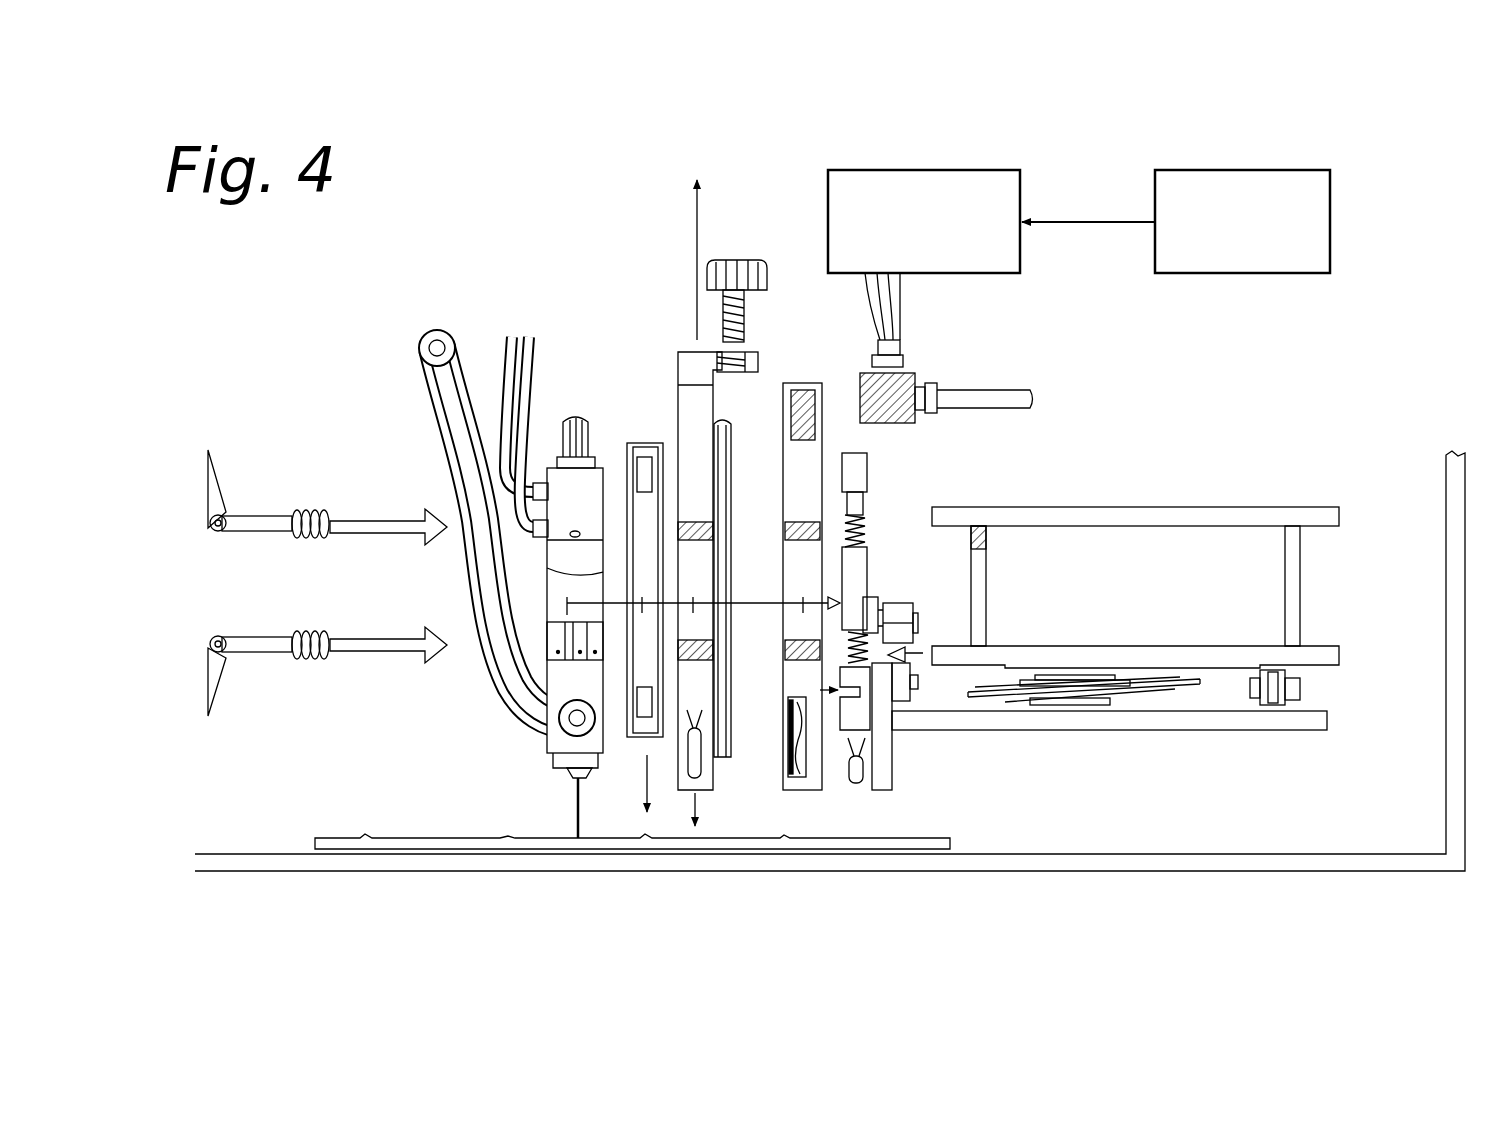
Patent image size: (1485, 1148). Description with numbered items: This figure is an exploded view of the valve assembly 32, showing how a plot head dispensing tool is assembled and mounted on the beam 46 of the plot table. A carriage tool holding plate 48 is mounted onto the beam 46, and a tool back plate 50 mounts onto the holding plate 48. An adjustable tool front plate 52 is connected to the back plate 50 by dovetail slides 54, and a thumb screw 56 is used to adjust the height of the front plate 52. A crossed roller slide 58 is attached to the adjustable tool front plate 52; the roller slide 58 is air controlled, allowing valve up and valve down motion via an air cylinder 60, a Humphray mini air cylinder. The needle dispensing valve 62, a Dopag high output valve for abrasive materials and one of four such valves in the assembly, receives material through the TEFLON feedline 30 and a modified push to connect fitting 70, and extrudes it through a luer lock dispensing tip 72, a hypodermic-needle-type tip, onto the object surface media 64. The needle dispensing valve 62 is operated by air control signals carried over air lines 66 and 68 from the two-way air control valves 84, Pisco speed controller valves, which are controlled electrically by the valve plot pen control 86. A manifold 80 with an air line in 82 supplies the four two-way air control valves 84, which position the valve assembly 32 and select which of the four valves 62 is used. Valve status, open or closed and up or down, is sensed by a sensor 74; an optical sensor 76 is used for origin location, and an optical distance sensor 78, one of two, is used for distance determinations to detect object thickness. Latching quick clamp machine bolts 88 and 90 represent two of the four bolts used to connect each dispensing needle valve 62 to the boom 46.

The TEFLON feedline 30 is at (425, 362).
The valve assembly 32 is at (470, 285).
The beam 46 is at (1330, 680).
The carriage tool holding plate 48 is at (846, 444).
The tool back plate 50 is at (803, 380).
The adjustable tool front plate 52 is at (680, 345).
The dovetail slides 54 is at (740, 733).
The thumb screw 56 is at (735, 248).
The crossed roller slide 58 is at (642, 443).
The air cylinder 60 is at (650, 577).
The needle dispensing valve 62 is at (530, 745).
The object surface media 64 is at (952, 833).
The air line 66 is at (512, 345).
The air line 68 is at (527, 345).
The push to connect fitting 70 is at (558, 742).
The luer lock dispensing tip 72 is at (585, 795).
The sensor 74 is at (603, 758).
The optical sensor 76 is at (718, 782).
The optical distance sensor 78 is at (884, 768).
The manifold 80 is at (918, 374).
The air line in 82 is at (1008, 388).
The two-way air control valves 84 is at (940, 170).
The valve plot pen control 86 is at (1257, 170).
The latching quick clamp machine bolt 88 is at (207, 712).
The latching quick clamp machine bolt 90 is at (222, 462).